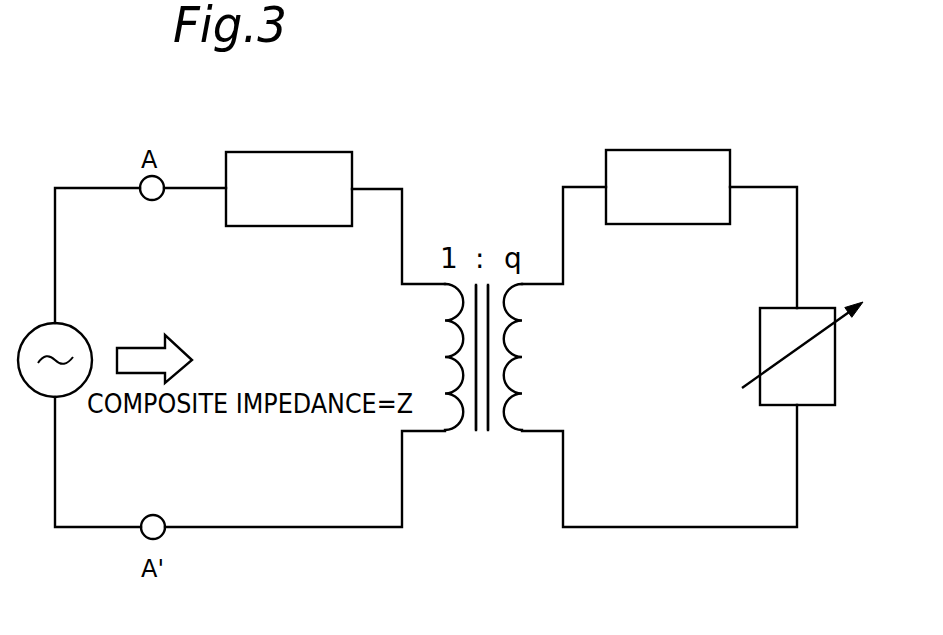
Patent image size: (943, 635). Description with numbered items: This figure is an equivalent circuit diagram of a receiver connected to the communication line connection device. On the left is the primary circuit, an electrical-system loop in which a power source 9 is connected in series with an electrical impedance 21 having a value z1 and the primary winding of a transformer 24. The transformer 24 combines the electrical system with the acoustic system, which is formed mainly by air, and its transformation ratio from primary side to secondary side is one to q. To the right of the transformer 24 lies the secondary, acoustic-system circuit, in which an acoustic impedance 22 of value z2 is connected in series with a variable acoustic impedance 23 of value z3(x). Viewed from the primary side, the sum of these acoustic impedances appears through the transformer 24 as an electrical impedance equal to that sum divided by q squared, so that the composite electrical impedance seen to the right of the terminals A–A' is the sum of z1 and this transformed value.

The power source 9 is at (67, 323).
The electrical impedance 21 is at (288, 152).
The acoustic impedance 22 is at (643, 150).
The variable acoustic impedance 23 is at (807, 308).
The transformer 24 is at (483, 436).